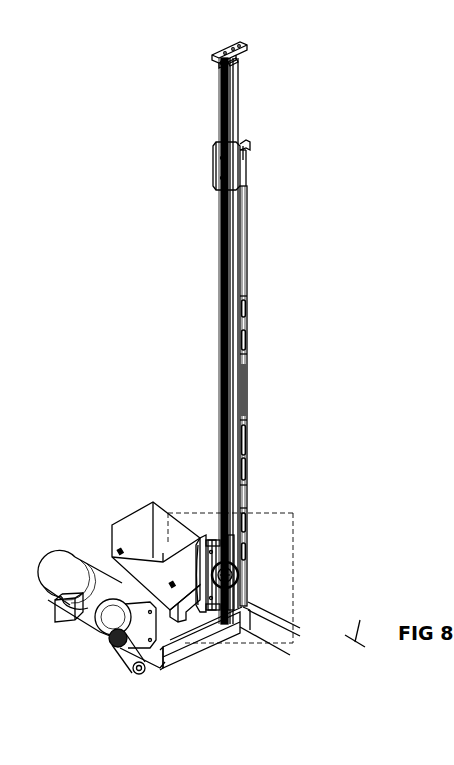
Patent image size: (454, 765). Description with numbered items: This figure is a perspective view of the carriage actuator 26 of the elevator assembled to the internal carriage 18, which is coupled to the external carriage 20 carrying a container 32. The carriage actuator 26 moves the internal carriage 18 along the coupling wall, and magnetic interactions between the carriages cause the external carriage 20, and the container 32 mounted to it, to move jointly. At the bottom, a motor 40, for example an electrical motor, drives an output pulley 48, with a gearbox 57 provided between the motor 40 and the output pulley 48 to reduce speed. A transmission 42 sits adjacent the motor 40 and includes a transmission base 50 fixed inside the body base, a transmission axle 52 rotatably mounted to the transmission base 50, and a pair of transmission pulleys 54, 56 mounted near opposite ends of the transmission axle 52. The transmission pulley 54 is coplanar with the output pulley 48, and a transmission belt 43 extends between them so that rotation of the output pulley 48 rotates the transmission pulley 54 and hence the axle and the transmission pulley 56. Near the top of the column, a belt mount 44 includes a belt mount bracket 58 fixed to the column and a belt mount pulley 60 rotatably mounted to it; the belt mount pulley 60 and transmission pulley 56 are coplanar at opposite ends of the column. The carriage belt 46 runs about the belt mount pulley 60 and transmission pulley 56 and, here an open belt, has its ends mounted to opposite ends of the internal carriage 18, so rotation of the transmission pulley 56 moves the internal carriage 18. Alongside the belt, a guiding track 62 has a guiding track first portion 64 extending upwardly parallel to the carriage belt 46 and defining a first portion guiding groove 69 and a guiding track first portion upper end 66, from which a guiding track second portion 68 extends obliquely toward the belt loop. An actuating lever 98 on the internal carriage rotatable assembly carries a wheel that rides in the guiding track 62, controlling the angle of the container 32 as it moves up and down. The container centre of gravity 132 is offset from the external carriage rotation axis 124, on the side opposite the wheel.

The internal carriage 18 is at (265, 595).
The external carriage 20 is at (208, 531).
The carriage actuator 26 is at (180, 320).
The container 32 is at (140, 527).
The motor 40 is at (80, 582).
The transmission 42 is at (208, 646).
The transmission belt 43 is at (130, 653).
The belt mount 44 is at (222, 47).
The carriage belt 46 is at (236, 118).
The output pulley 48 is at (110, 641).
The transmission base 50 is at (178, 660).
The transmission axle 52 is at (240, 627).
The transmission pulley 54 is at (153, 674).
The transmission pulley 56 is at (250, 612).
The gearbox 57 is at (130, 597).
The belt mount bracket 58 is at (228, 43).
The belt mount pulley 60 is at (222, 65).
The guiding track 62 is at (250, 335).
The guiding track first portion 64 is at (244, 436).
The guiding track first portion upper end 66 is at (245, 162).
The guiding track second portion 68 is at (242, 173).
The first portion guiding groove 69 is at (244, 377).
The actuating lever 98 is at (244, 572).
The external carriage rotation axis 124 is at (365, 603).
The container centre of gravity 132 is at (183, 581).